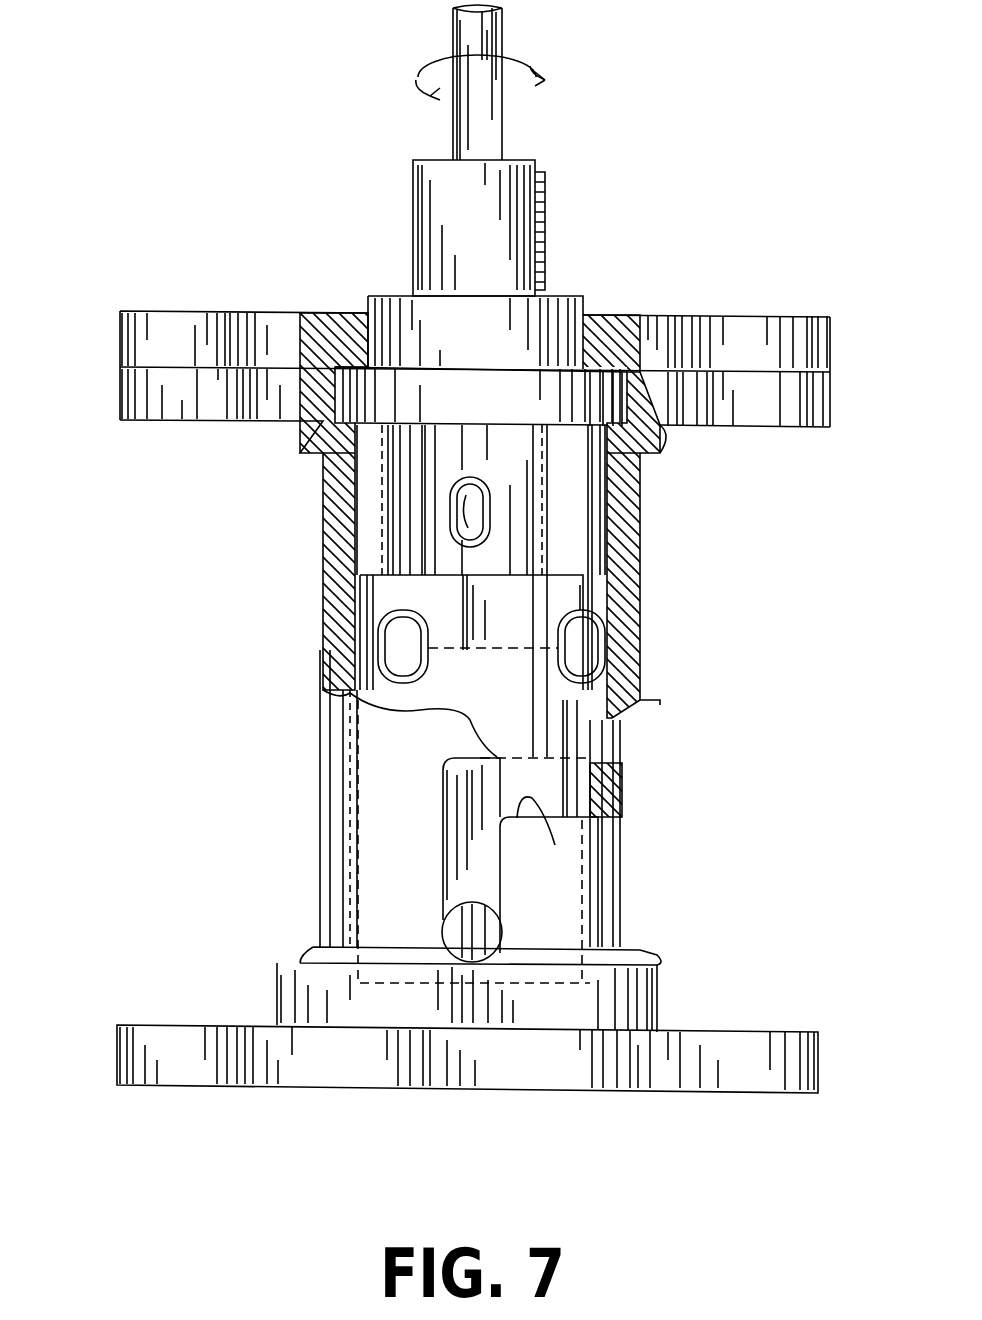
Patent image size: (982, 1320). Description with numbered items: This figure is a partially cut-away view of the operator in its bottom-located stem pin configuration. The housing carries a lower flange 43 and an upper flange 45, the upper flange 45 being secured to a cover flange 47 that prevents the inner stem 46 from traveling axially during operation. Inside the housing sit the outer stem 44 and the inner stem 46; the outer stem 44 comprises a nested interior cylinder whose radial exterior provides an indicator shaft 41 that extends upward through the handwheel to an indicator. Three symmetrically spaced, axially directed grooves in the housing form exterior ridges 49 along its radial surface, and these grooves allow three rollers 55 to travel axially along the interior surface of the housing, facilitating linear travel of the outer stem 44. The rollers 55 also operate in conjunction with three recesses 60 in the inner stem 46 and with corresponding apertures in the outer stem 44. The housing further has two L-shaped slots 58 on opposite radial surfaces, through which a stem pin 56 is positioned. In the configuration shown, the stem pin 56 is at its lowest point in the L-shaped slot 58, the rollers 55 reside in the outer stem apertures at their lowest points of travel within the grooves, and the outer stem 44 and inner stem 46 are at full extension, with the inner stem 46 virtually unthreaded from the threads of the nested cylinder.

The indicator shaft 41 is at (445, 35).
The lower flange 43 is at (168, 1025).
The outer stem 44 is at (480, 862).
The upper flange 45 is at (200, 405).
The inner stem 46 is at (412, 322).
The cover flange 47 is at (172, 335).
The exterior ridges 49 is at (640, 577).
The rollers 55 is at (378, 620).
The stem pin 56 is at (447, 917).
The L-shaped slot 58 is at (555, 845).
The recesses 60 is at (488, 497).